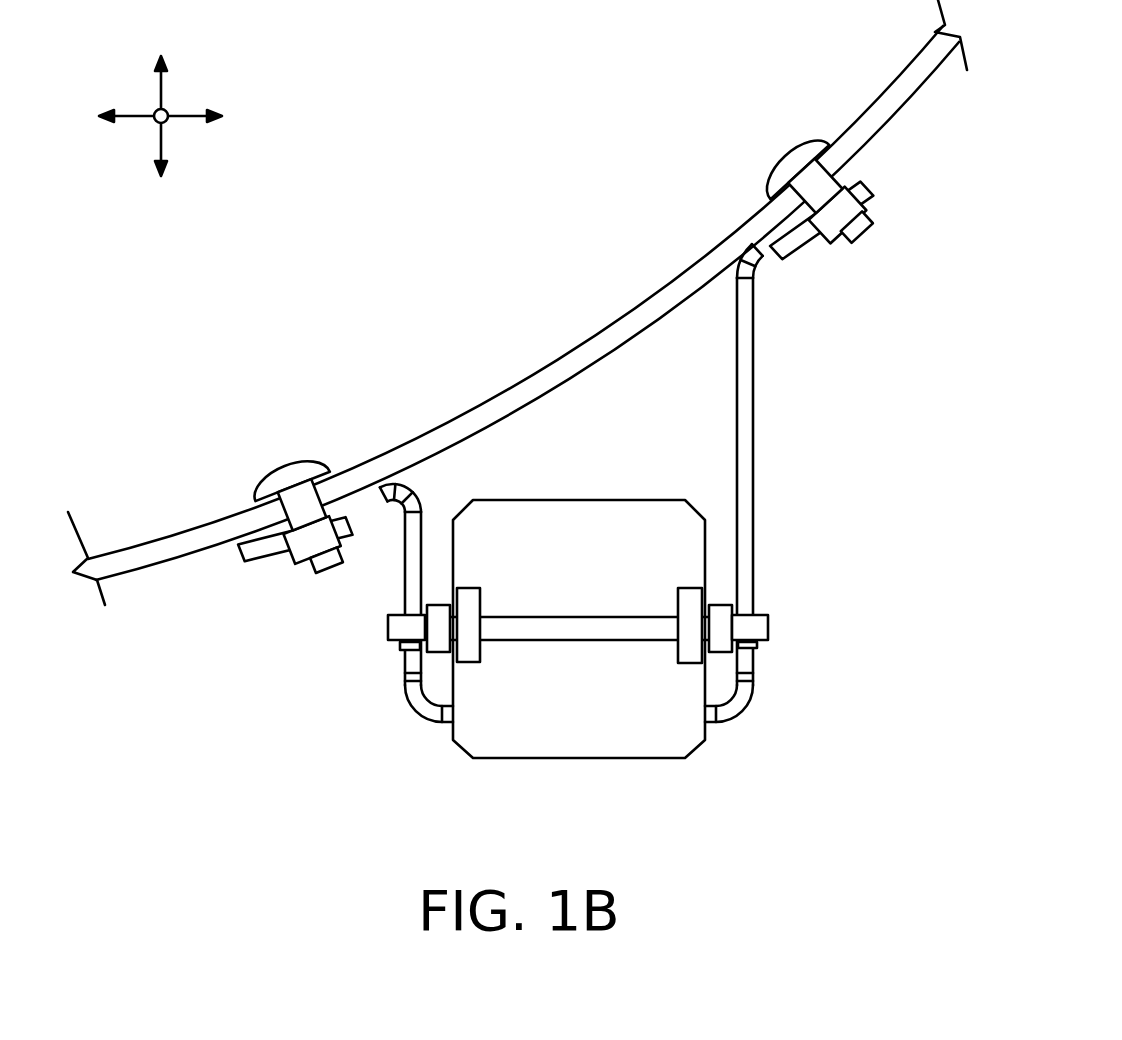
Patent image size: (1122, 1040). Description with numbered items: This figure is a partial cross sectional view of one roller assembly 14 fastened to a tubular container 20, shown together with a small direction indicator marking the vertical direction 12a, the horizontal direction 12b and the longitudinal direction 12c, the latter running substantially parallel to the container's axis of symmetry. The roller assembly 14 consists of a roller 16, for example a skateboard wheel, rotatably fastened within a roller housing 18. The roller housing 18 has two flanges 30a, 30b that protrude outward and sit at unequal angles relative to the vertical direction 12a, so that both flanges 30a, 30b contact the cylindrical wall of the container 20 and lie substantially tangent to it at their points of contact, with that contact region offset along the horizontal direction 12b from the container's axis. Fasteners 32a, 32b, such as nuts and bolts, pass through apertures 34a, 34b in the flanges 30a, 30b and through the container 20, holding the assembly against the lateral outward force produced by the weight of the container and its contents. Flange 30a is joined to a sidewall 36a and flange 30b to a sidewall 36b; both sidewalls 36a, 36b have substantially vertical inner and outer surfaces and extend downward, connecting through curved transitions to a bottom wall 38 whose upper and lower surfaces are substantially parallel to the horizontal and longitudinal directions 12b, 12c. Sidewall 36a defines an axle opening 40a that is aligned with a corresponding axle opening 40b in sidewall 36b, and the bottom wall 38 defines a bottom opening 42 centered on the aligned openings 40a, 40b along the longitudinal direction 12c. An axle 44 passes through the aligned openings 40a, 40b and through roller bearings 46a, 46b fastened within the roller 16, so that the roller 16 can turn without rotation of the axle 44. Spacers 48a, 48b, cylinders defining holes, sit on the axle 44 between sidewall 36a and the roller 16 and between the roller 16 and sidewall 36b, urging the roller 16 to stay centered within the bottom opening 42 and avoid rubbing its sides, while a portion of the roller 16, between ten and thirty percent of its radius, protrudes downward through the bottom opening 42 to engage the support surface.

The vertical direction 12a is at (158, 98).
The horizontal direction 12b is at (183, 115).
The longitudinal direction 12c is at (167, 123).
The roller assembly 14 is at (886, 779).
The roller 16 is at (577, 510).
The roller housing 18 is at (808, 424).
The container 20 is at (530, 380).
The flange 30a is at (262, 540).
The flange 30b is at (775, 240).
The fastener 32a is at (323, 560).
The fastener 32b is at (847, 230).
The aperture 34a is at (338, 503).
The aperture 34b is at (852, 182).
The sidewall 36a is at (402, 565).
The sidewall 36b is at (757, 462).
The bottom wall 38 is at (438, 722).
The axle opening 40a is at (407, 647).
The axle opening 40b is at (747, 645).
The bottom opening 42 is at (730, 720).
The axle 44 is at (592, 623).
The roller bearing 46a is at (477, 663).
The roller bearing 46b is at (682, 662).
The spacer 48a is at (437, 600).
The spacer 48b is at (718, 617).